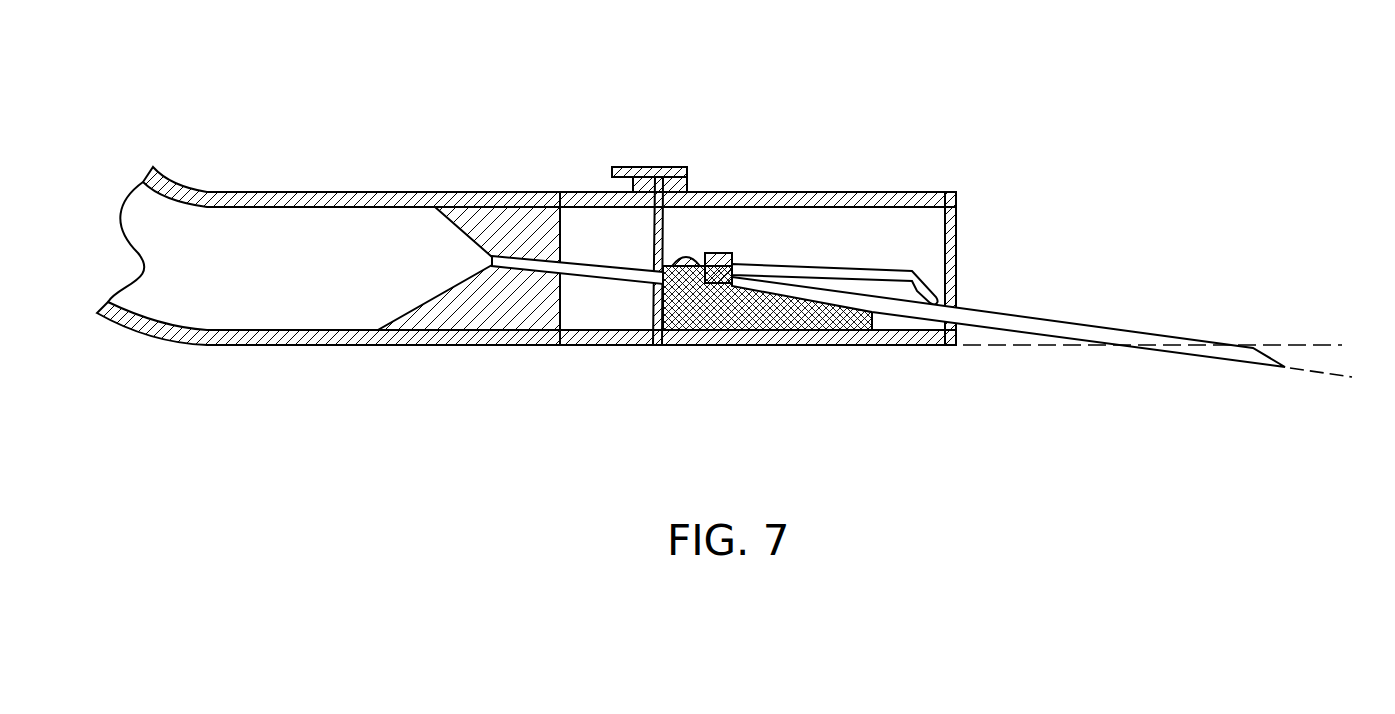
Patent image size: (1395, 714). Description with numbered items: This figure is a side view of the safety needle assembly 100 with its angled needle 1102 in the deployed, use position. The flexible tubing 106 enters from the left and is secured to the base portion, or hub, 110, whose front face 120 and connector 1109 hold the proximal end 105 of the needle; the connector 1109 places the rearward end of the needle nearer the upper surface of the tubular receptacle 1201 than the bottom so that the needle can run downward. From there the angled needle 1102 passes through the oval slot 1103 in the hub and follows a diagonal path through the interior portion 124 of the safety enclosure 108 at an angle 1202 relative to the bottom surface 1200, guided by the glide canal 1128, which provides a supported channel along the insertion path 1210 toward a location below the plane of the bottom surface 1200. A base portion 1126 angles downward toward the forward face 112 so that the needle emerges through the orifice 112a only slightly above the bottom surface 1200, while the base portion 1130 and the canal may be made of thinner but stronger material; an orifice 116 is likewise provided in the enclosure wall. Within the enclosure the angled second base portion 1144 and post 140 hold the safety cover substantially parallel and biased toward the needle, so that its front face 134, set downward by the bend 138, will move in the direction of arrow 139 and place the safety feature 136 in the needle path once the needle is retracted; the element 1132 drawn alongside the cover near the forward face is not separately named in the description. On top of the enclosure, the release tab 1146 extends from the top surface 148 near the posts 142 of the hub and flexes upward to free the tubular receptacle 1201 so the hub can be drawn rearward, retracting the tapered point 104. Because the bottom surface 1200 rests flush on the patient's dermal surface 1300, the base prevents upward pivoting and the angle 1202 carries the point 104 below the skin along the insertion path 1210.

The safety needle assembly 100 is at (355, 88).
The tapered point 104 is at (1273, 348).
The proximal end 105 is at (492, 259).
The flexible tubing 106 is at (233, 347).
The safety enclosure 108 is at (775, 182).
The base portion (hub) 110 is at (610, 183).
The forward face 112 is at (958, 302).
The orifice 112a is at (977, 304).
The orifice 116 is at (688, 333).
The front face 120 is at (665, 327).
The interior portion 124 is at (797, 236).
The front face 134 is at (930, 290).
The safety feature 136 is at (957, 280).
The bend 138 is at (918, 271).
The arrow 139 is at (912, 343).
The post 140 is at (687, 252).
The posts 142 is at (638, 167).
The top surface 148 is at (667, 167).
The angled needle 1102 is at (1182, 340).
The slot 1103 is at (653, 272).
The connector 1109 is at (558, 303).
The base portion 1126 is at (827, 320).
The glide canal 1128 is at (815, 268).
The base portion 1130 is at (653, 300).
The sheath tube 1132 is at (846, 270).
The angled second base portion 1144 is at (722, 252).
The release tab 1146 is at (620, 167).
The bottom surface 1200 is at (712, 360).
The tubular receptacle 1201 is at (452, 192).
The angle 1202 is at (775, 318).
The insertion path 1210 is at (1323, 374).
The dermal surface 1300 is at (1318, 345).